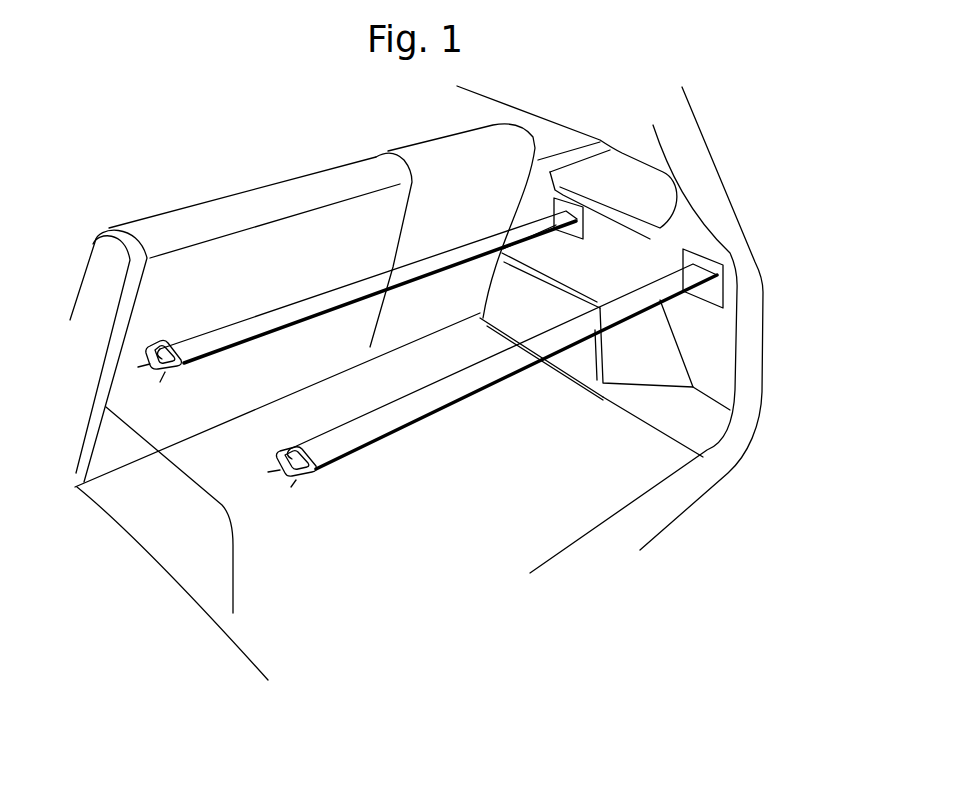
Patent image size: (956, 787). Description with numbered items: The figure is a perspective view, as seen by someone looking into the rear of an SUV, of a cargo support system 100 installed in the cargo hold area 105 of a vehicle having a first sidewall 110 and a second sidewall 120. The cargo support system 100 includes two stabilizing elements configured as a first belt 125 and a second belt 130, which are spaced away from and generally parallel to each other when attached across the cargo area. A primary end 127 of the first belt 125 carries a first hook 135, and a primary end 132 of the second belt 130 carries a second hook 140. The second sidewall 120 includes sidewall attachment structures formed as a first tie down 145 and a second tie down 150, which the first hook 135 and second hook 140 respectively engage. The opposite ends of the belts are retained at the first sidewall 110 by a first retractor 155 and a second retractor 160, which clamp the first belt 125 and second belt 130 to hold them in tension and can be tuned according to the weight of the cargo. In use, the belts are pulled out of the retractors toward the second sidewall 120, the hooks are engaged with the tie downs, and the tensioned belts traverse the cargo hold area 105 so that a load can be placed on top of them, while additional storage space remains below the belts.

The cargo support system 100 is at (333, 258).
The cargo hold area 105 is at (404, 505).
The first sidewall 110 is at (605, 317).
The second sidewall 120 is at (277, 496).
The first belt 125 is at (288, 310).
The primary end of the first belt 127 is at (193, 347).
The second belt 130 is at (415, 407).
The primary end of the second belt 132 is at (287, 479).
The first hook 135 is at (190, 362).
The second hook 140 is at (322, 474).
The first tie down 145 is at (161, 384).
The second tie down 150 is at (296, 488).
The first retractor 155 is at (583, 222).
The second retractor 160 is at (723, 275).